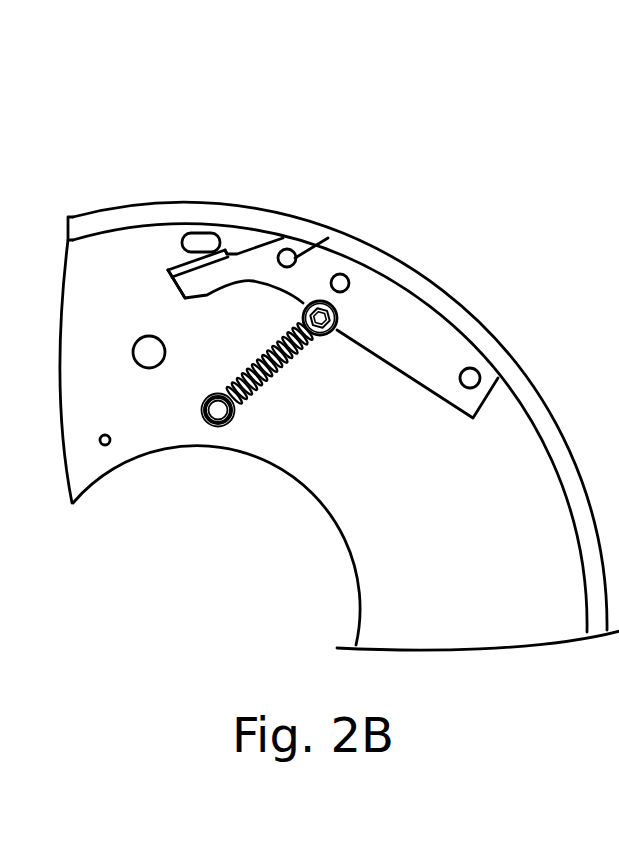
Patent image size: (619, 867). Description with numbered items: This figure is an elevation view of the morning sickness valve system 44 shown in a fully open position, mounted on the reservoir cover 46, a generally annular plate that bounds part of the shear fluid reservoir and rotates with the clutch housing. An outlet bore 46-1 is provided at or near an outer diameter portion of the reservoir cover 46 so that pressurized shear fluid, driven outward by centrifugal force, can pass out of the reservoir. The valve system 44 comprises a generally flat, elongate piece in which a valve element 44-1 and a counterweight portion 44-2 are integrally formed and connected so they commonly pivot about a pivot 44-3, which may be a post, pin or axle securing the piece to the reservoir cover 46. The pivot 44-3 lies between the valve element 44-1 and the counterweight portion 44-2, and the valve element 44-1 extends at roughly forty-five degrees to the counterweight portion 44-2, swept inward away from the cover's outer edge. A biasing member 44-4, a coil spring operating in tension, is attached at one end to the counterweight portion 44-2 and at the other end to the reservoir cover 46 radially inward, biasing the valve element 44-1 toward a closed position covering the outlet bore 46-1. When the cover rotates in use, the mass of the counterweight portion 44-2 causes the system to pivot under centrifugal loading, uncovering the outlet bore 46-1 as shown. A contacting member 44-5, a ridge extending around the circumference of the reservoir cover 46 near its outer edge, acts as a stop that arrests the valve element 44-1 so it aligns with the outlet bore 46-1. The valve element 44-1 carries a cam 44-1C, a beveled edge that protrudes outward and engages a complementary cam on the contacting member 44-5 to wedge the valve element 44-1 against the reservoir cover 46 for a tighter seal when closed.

The morning sickness valve system 44 is at (333, 177).
The valve element 44-1 is at (207, 278).
The cam 44-1C is at (227, 252).
The counterweight portion 44-2 is at (435, 330).
The pivot 44-3 is at (339, 246).
The biasing member 44-4 is at (302, 362).
The contacting member 44-5 is at (135, 218).
The reservoir cover 46 is at (130, 408).
The outlet bore 46-1 is at (202, 230).